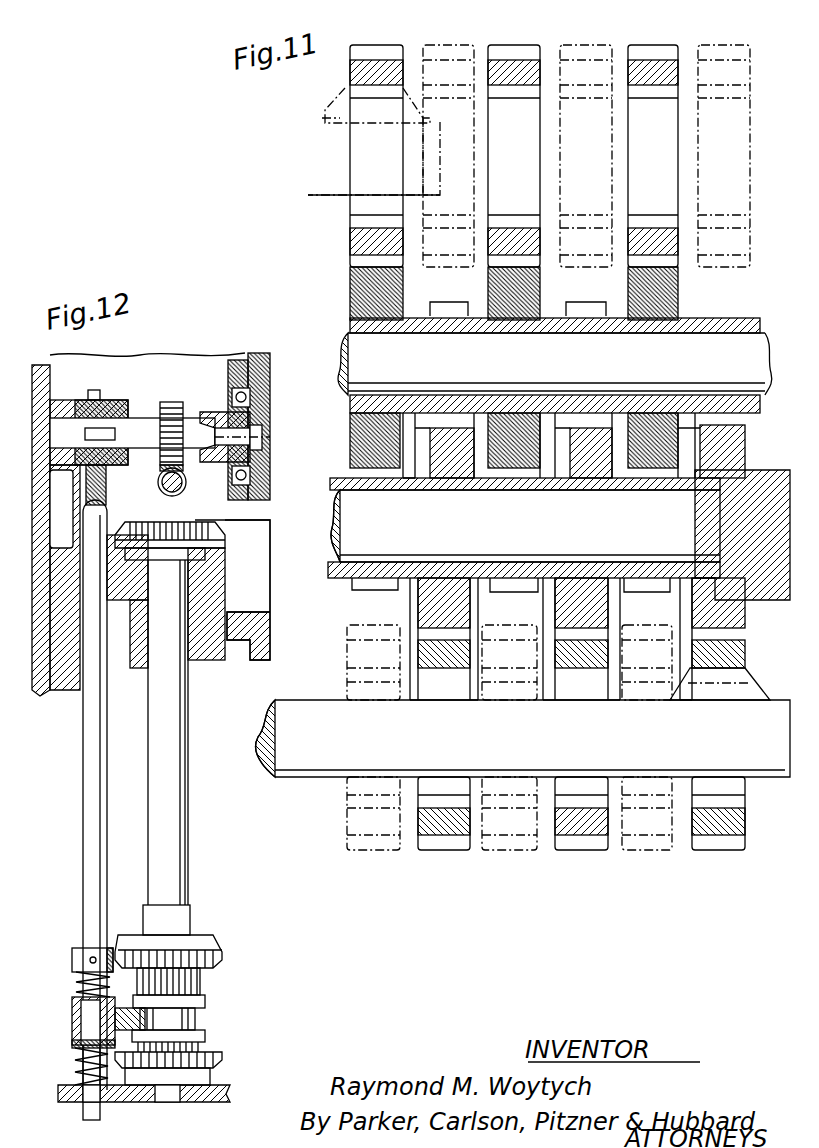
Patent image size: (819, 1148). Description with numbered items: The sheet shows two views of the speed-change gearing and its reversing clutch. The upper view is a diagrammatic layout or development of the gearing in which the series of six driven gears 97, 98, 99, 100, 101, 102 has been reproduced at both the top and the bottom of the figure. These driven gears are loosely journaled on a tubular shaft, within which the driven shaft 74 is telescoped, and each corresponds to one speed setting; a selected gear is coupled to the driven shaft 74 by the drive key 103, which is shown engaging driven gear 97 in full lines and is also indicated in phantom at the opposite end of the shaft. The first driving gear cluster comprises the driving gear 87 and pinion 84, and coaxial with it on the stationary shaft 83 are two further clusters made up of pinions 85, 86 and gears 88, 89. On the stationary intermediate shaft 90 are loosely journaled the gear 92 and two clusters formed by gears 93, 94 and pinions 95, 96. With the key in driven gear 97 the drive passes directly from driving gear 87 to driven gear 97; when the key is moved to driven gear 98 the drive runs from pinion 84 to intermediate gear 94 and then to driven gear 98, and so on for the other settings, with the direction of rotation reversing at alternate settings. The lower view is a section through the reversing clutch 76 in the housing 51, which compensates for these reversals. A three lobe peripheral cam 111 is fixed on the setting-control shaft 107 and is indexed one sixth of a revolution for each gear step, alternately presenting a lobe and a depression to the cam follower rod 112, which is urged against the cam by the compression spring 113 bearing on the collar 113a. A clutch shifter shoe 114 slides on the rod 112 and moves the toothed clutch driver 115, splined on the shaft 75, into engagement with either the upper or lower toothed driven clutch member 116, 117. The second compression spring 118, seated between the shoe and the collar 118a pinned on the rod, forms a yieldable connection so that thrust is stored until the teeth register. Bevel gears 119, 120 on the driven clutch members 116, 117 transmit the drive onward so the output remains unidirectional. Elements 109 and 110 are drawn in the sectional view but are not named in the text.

In FIG. 12, the housing 51 is at (47, 690).
In FIG. 11, the driven shaft 74 is at (338, 200).
In FIG. 12, the shaft 75 is at (188, 838).
In FIG. 12, the reversing clutch 76 is at (230, 938).
In FIG. 11, the stationary shaft 83 is at (332, 536).
In FIG. 11, the pinion 84 is at (646, 588).
In FIG. 11, the pinion 85 is at (508, 590).
In FIG. 11, the pinion 86 is at (360, 590).
In FIG. 11, the driving gear 87 is at (706, 612).
In FIG. 11, the gear 88 is at (556, 609).
In FIG. 11, the gear 89 is at (422, 602).
In FIG. 11, the stationary intermediate shaft 90 is at (763, 350).
In FIG. 11, the gear 92 is at (352, 290).
In FIG. 11, the gear 93 is at (538, 287).
In FIG. 11, the intermediate gear 94 is at (678, 288).
In FIG. 11, the pinion 95 is at (448, 308).
In FIG. 11, the pinion 96 is at (596, 308).
In FIG. 11, the driven gear 97 is at (733, 50).
In FIG. 11, the driven gear 98 is at (657, 50).
In FIG. 11, the driven gear 99 is at (597, 50).
In FIG. 11, the driven gear 100 is at (522, 52).
In FIG. 11, the driven gear 101 is at (455, 52).
In FIG. 11, the driven gear 102 is at (385, 45).
In FIG. 11, the drive key 103 is at (345, 100).
In FIG. 12, the drive key 103 is at (255, 395).
In FIG. 12, the setting-control shaft 107 is at (263, 420).
In FIG. 12, the gear 109 is at (174, 402).
In FIG. 12, the hub 110 is at (187, 486).
In FIG. 12, the three lobe peripheral cam 111 is at (96, 392).
In FIG. 12, the cam follower rod 112 is at (83, 762).
In FIG. 12, the compression spring 113 is at (75, 1068).
In FIG. 12, the collar 113a is at (72, 1045).
In FIG. 12, the clutch shifter shoe 114 is at (72, 1008).
In FIG. 12, the toothed clutch driver 115 is at (208, 1001).
In FIG. 12, the toothed driven clutch member 116 is at (216, 975).
In FIG. 12, the toothed driven clutch member 117 is at (217, 1038).
In FIG. 12, the second compression spring 118 is at (76, 978).
In FIG. 12, the collar 118a is at (67, 947).
In FIG. 12, the bevel gear 119 is at (220, 950).
In FIG. 12, the bevel gear 120 is at (222, 1060).